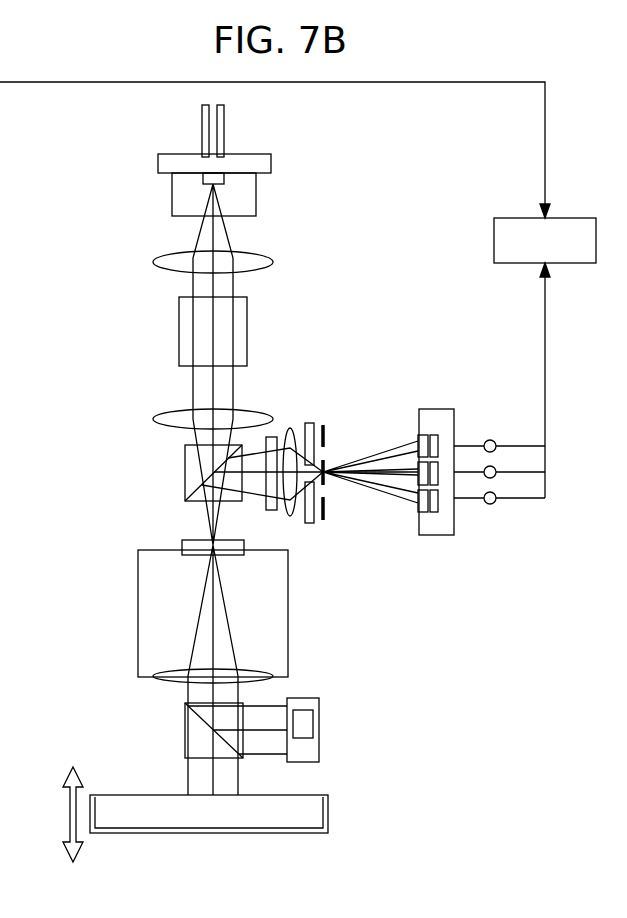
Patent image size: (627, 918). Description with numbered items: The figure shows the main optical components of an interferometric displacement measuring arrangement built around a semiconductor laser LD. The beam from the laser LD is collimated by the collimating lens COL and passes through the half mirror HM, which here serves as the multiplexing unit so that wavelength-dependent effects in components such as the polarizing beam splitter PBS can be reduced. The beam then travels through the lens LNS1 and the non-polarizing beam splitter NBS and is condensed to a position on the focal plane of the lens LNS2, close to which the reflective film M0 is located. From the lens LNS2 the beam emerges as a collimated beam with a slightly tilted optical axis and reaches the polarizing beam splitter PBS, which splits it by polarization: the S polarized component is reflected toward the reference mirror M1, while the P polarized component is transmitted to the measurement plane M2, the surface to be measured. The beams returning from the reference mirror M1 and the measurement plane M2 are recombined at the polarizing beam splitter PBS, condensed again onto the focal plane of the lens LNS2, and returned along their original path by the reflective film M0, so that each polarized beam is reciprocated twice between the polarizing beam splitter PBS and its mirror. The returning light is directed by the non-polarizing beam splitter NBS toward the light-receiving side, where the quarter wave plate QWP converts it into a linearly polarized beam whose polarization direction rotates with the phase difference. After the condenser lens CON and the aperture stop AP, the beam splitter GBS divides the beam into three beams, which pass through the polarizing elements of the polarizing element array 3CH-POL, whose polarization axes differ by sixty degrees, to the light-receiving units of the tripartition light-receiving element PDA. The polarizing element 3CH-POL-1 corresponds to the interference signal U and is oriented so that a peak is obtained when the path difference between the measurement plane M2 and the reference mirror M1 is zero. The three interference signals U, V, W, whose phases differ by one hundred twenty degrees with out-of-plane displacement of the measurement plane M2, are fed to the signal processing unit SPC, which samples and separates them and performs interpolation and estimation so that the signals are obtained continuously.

The semiconductor laser LD is at (178, 191).
The collimating lens COL is at (173, 258).
The half mirror HM is at (185, 318).
The lens LNS1 is at (163, 420).
The non-polarizing beam splitter NBS is at (188, 460).
The reflective film M0 is at (188, 545).
The quarter wave plate QWP is at (271, 511).
The condenser lens CON is at (288, 428).
The aperture stop AP is at (310, 423).
The beam splitter GBS is at (328, 442).
The tripartition light-receiving element PDA is at (441, 438).
The polarizing element 3CH-POL-1 is at (418, 440).
The polarizing element array 3CH-POL is at (430, 440).
The interference signal U is at (499, 437).
The interference signal V is at (499, 464).
The interference signal W is at (499, 491).
The signal processing unit SPC is at (545, 240).
The lens LNS2 is at (175, 683).
The polarizing beam splitter PBS is at (186, 740).
The reference mirror M1 is at (316, 711).
The measurement plane M2 is at (312, 810).